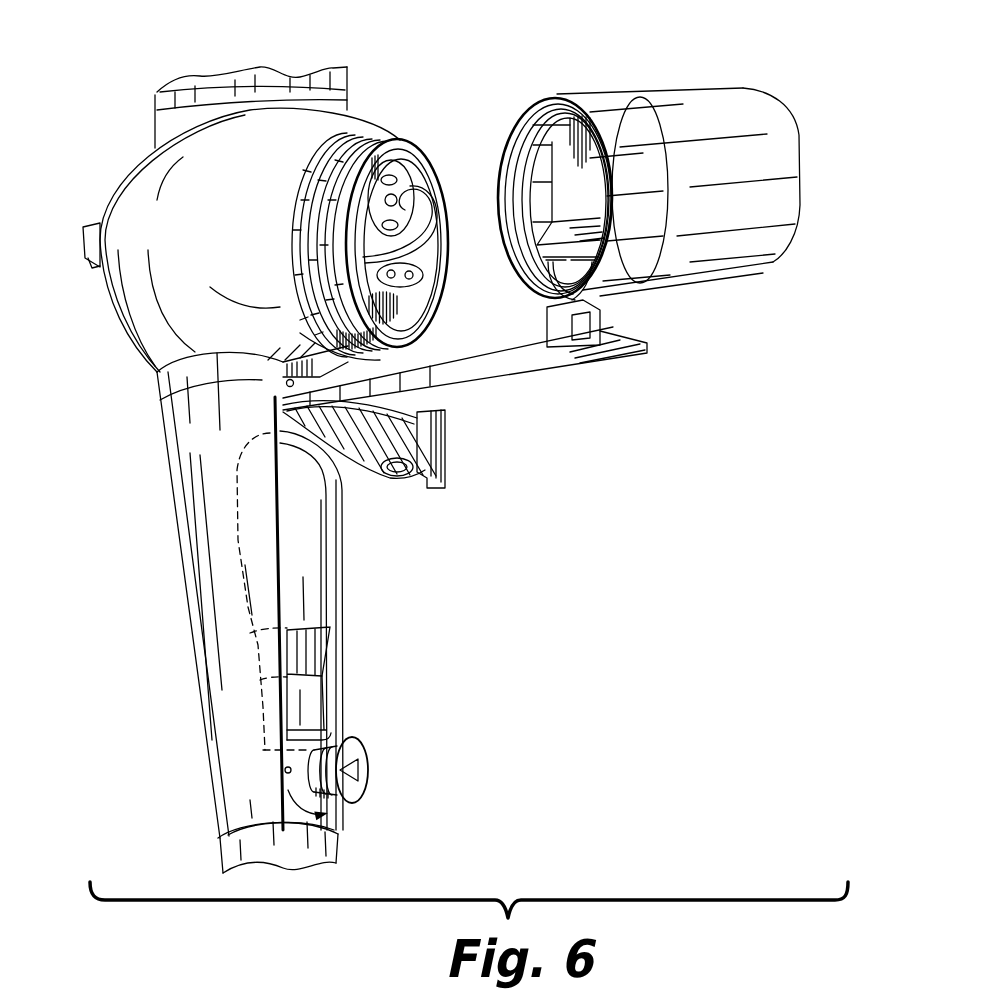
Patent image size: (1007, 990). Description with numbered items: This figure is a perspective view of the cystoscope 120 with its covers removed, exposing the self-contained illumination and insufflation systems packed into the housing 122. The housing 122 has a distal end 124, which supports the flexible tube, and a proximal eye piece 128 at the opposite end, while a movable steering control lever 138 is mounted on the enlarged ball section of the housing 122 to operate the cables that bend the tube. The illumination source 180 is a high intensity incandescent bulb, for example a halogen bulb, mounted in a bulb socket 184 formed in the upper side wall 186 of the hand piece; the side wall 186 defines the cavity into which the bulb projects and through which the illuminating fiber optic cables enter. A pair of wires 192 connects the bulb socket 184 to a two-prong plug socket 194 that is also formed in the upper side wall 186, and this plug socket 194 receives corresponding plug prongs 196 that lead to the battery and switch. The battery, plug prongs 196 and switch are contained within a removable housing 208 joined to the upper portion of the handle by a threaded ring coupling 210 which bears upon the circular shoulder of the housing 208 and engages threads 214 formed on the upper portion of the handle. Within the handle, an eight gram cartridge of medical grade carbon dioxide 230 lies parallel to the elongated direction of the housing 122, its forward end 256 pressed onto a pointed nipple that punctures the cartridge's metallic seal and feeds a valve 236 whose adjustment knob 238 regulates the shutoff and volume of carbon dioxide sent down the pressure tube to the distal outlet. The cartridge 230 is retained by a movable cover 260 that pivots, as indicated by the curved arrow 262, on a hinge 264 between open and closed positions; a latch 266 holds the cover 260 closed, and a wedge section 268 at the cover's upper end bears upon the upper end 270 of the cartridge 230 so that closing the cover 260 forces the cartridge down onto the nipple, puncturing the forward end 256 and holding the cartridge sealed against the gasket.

The proximal eye piece 128 is at (140, 108).
The steering control lever 138 is at (95, 262).
The threads 214 is at (388, 140).
The illumination source 180 is at (455, 122).
The bulb socket 184 is at (434, 177).
The wires 192 is at (437, 197).
The two-prong plug socket 194 is at (412, 261).
The plug prongs 196 is at (545, 283).
The upper side wall 186 is at (392, 322).
The threaded ring coupling 210 is at (612, 100).
The removable housing 208 is at (718, 82).
The latch 266 is at (600, 313).
The movable cover 260 is at (562, 367).
The wedge section 268 is at (413, 443).
The curved arrow 262 is at (480, 450).
The hinge 264 is at (270, 381).
The cystoscope 120 is at (388, 580).
The CO2 cartridge 230 is at (330, 573).
The upper end of the cartridge 270 is at (305, 448).
The housing 122 is at (348, 649).
The forward end of the cartridge 256 is at (318, 714).
The valve 236 is at (375, 742).
The adjustment knob 238 is at (378, 770).
The distal end 124 is at (345, 847).